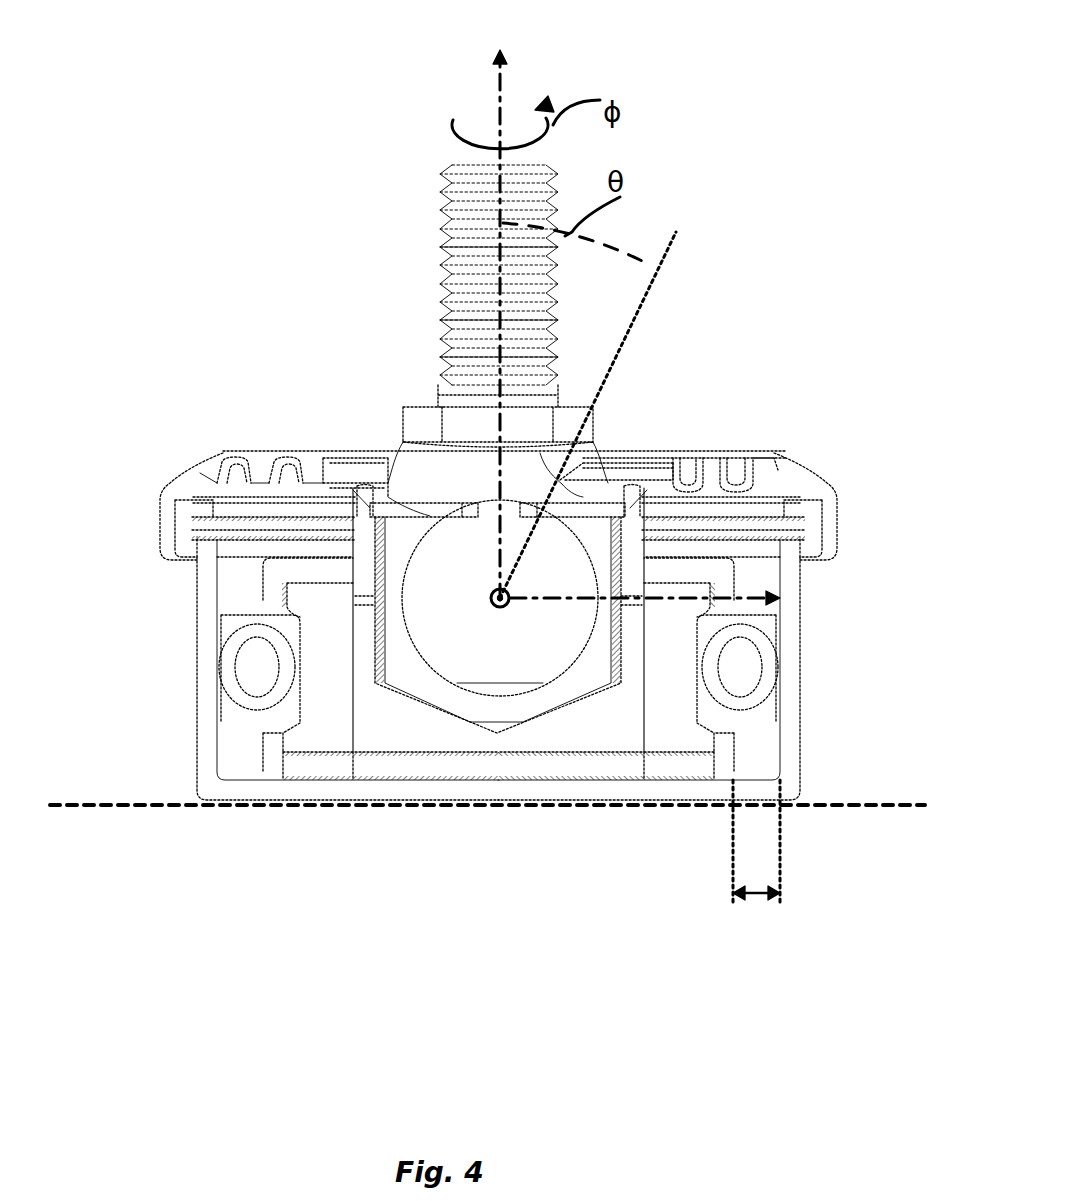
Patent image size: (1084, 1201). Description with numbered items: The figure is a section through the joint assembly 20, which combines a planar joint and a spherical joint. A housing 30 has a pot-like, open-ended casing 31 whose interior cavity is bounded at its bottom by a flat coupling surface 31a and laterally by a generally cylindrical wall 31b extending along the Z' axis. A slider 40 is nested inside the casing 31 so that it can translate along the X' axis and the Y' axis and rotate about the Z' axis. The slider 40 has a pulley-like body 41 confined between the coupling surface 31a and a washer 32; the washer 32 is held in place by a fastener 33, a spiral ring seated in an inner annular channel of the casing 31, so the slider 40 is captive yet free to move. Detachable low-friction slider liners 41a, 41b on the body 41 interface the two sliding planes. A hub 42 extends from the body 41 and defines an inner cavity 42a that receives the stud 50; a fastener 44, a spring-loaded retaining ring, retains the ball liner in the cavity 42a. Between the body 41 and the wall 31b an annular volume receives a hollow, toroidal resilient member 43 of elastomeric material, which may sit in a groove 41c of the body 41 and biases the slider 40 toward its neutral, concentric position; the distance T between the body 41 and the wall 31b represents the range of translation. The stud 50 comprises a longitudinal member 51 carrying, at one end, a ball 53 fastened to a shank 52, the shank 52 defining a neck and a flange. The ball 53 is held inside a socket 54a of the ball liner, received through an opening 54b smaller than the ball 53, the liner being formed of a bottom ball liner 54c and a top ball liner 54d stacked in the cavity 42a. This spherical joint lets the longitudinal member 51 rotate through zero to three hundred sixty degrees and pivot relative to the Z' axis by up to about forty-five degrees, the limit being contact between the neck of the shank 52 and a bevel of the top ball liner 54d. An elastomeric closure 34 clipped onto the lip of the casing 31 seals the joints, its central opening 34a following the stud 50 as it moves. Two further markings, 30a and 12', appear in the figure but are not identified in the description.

The joint assembly 20 is at (142, 94).
The stud 50 is at (372, 143).
The longitudinal member 51 is at (440, 248).
The shank 52 is at (417, 413).
The ball 53 is at (517, 671).
The socket 54a is at (572, 657).
The opening 54b is at (425, 525).
The bottom ball liner 54c is at (467, 710).
The top ball liner 54d is at (390, 573).
The housing 30 is at (786, 381).
The cover side wall 30a is at (780, 497).
The casing 31 is at (815, 507).
The coupling surface 31a is at (758, 782).
The wall 31b is at (778, 705).
The washer 32 is at (758, 557).
The fastener 33 is at (783, 528).
The closure 34 is at (642, 458).
The central opening 34a is at (548, 478).
The slider 40 is at (290, 789).
The body 41 is at (295, 740).
The slider liner 41a is at (280, 765).
The slider liner 41b is at (263, 588).
The groove 41c is at (300, 708).
The hub 42 is at (357, 497).
The inner cavity 42a is at (380, 550).
The resilient member 43 is at (220, 666).
The fastener 44 is at (368, 505).
The mounting plane 12' is at (502, 847).
The range of translation motion T is at (755, 902).
The Z' axis Z' is at (564, 303).
The Y' axis Y' is at (645, 629).
The X' axis X' is at (532, 577).